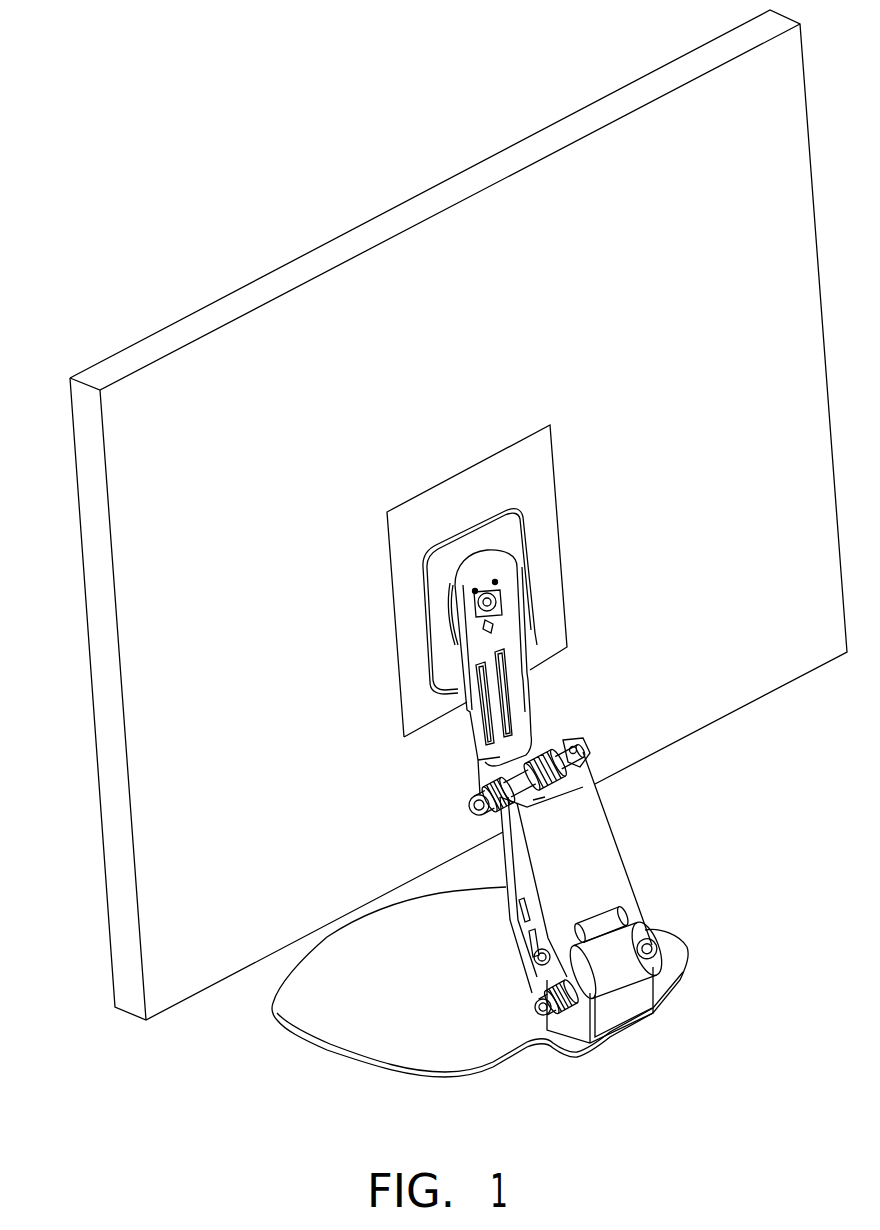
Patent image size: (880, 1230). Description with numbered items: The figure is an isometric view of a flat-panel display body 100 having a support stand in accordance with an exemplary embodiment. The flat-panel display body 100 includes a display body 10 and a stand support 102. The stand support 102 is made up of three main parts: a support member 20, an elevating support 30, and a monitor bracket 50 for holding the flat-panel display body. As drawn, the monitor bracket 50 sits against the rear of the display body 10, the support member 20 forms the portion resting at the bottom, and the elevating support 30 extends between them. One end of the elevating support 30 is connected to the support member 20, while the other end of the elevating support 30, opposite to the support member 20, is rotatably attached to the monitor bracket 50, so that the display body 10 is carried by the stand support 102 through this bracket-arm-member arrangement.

The flat-panel display body 100 is at (416, 43).
The display body 10 is at (477, 290).
The stand support 102 is at (717, 792).
The monitor bracket 50 is at (503, 625).
The elevating support 30 is at (612, 878).
The support member 20 is at (670, 948).